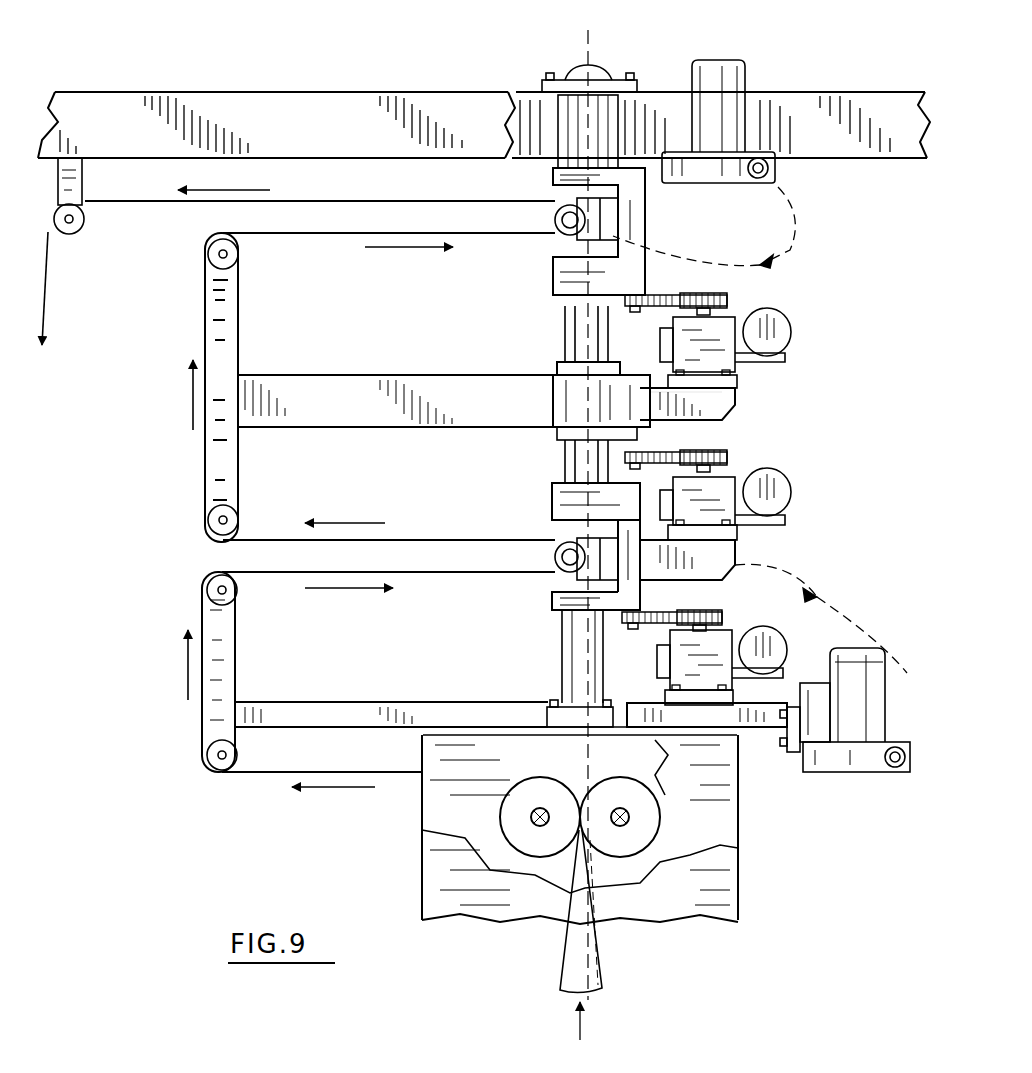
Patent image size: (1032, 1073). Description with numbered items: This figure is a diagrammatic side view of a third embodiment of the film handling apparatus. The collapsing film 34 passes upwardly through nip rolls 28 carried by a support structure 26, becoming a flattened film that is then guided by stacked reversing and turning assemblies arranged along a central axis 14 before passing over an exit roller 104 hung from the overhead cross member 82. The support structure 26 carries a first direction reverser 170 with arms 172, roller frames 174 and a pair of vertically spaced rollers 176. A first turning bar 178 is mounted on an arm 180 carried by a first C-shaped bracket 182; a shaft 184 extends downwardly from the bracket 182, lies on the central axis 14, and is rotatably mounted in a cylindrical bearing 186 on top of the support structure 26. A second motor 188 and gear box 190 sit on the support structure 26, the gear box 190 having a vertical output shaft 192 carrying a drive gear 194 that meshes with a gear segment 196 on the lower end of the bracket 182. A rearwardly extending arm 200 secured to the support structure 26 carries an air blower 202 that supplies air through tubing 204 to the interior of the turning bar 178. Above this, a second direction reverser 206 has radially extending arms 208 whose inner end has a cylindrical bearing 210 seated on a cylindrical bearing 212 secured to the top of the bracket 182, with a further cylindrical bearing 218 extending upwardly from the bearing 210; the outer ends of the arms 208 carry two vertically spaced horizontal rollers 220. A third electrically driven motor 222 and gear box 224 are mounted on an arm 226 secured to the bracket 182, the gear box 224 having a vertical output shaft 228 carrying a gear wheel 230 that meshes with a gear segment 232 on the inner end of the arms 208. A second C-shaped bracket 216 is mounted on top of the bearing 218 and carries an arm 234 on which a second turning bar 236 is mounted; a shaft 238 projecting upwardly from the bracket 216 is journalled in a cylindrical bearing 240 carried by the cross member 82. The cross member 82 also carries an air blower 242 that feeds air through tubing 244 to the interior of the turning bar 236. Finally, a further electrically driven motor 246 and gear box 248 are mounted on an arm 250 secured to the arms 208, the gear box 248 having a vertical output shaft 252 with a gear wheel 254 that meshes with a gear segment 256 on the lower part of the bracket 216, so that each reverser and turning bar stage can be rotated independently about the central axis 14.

The central axis 14 is at (590, 62).
The support structure 26 is at (730, 858).
The nip rolls 28 is at (560, 795).
The collapsing film 34 is at (155, 203).
The cross member 82 is at (365, 98).
The exit roller 104 is at (78, 232).
The first direction reverser 170 is at (183, 718).
The arms 172 is at (295, 708).
The roller frames 174 is at (212, 620).
The vertically spaced rollers 176 is at (240, 592).
The first turning bar 178 is at (555, 557).
The arm 180 is at (552, 522).
The first C-shaped bracket 182 is at (552, 492).
The shaft 184 is at (562, 627).
The cylindrical bearing 186 is at (562, 646).
The second motor 188 is at (775, 650).
The gear box 190 is at (712, 728).
The vertical output shaft 192 is at (700, 628).
The drive gear 194 is at (712, 615).
The gear segment 196 is at (652, 628).
The rearwardly extending arm 200 is at (790, 740).
The air blower 202 is at (850, 775).
The tubing 204 is at (897, 650).
The second direction reverser 206 is at (197, 328).
The radially extending arms 208 is at (298, 380).
The cylindrical bearing 210 is at (557, 368).
The cylindrical bearing 212 is at (557, 436).
The second C-shaped bracket 216 is at (645, 210).
The cylindrical bearing 218 is at (553, 302).
The horizontal rollers 220 is at (240, 256).
The third electrically driven motor 222 is at (788, 495).
The gear box 224 is at (722, 518).
The arm 226 is at (722, 562).
The vertical output shaft 228 is at (742, 475).
The gear wheel 230 is at (735, 460).
The gear segment 232 is at (722, 452).
The arm 234 is at (560, 196).
The second turning bar 236 is at (558, 225).
The shaft 238 is at (562, 128).
The cylindrical bearing 240 is at (625, 108).
The air blower 242 is at (745, 100).
The tubing 244 is at (798, 228).
The further electrically driven motor 246 is at (788, 330).
The gear box 248 is at (737, 385).
The arm 250 is at (722, 400).
The vertical output shaft 252 is at (735, 318).
The gear wheel 254 is at (712, 292).
The gear segment 256 is at (662, 308).